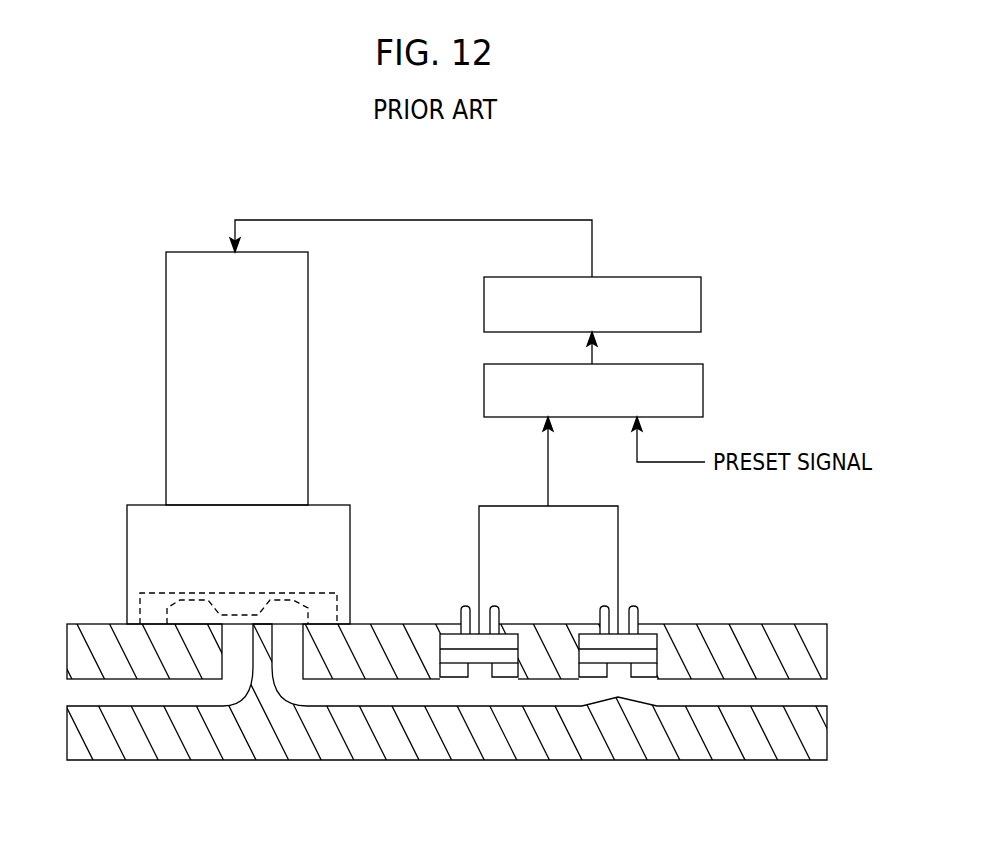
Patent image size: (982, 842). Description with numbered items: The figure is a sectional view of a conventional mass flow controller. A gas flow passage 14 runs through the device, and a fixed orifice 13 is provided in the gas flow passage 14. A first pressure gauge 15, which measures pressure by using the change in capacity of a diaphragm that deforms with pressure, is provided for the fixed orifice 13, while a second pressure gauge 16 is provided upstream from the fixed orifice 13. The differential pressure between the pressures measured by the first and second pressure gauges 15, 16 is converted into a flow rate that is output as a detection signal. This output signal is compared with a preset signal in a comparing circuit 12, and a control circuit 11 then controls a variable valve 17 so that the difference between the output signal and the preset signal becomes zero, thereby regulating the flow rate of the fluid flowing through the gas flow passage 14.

The control circuit 11 is at (701, 283).
The comparing circuit 12 is at (703, 375).
The fixed orifice 13 is at (619, 690).
The gas flow passage 14 is at (437, 695).
The first pressure gauge 15 is at (640, 645).
The second pressure gauge 16 is at (503, 645).
The variable valve 17 is at (140, 593).